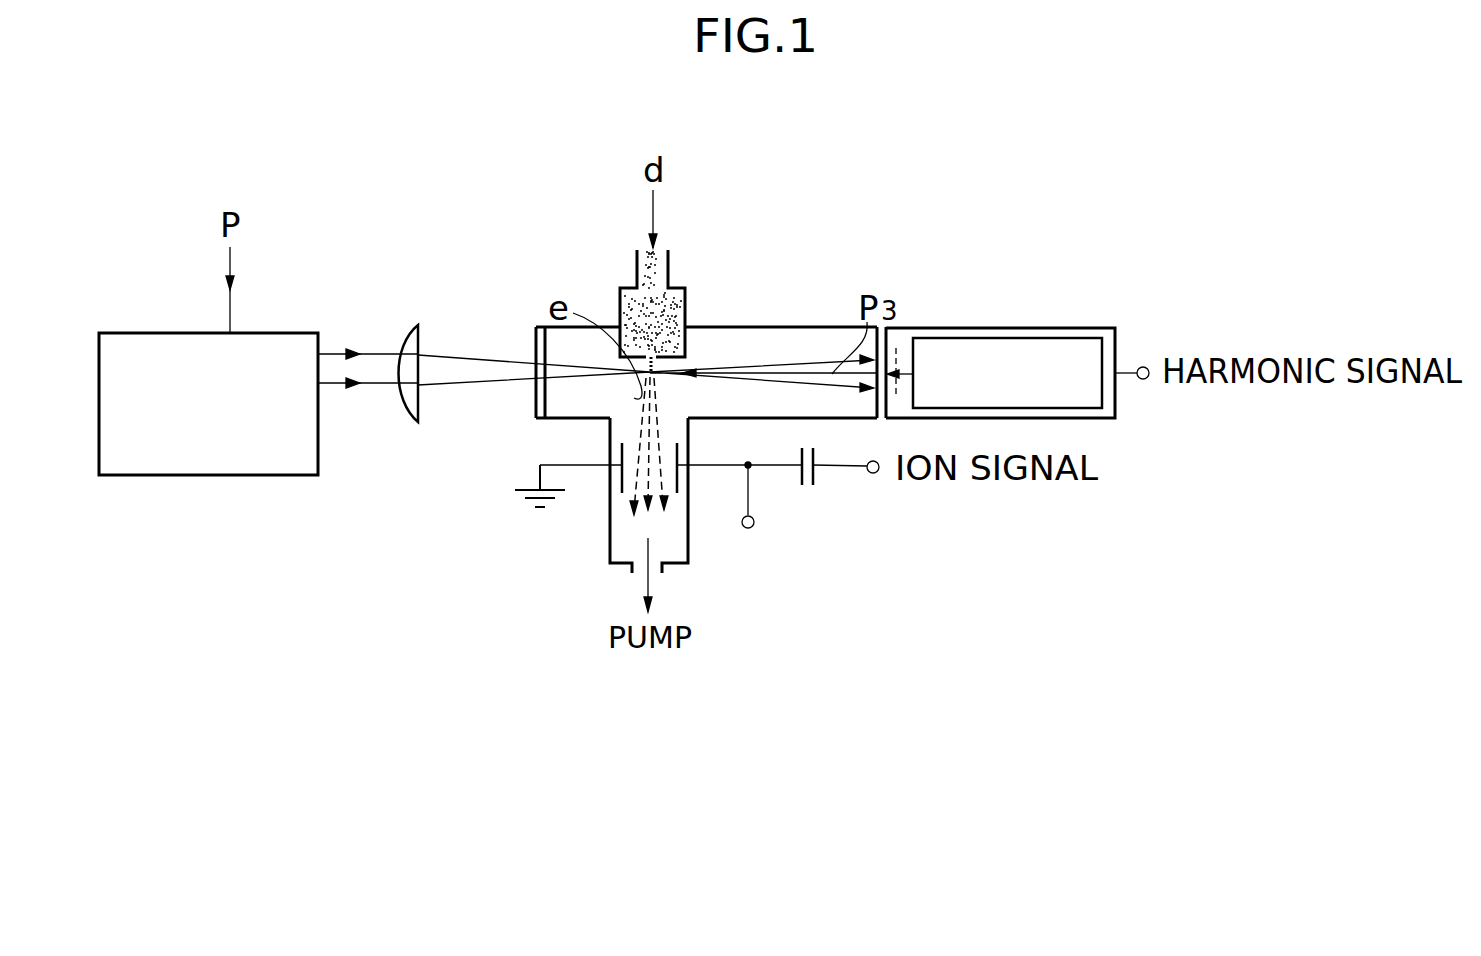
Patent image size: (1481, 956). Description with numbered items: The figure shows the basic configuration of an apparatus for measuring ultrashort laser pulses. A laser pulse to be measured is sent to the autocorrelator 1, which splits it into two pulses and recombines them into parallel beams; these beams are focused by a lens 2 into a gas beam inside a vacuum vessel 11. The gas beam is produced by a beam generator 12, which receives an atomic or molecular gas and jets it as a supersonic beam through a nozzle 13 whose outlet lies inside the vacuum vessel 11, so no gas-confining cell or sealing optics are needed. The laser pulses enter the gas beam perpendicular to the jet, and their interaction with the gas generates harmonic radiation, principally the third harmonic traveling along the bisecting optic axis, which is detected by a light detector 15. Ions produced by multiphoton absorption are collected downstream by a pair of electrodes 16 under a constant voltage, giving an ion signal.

The autocorrelator 1 is at (143, 333).
The lens 2 is at (403, 342).
The vacuum vessel 11 is at (790, 326).
The beam generator 12 is at (675, 290).
The nozzle 13 is at (657, 357).
The light detector 15 is at (1082, 338).
The pair of electrodes 16 is at (618, 478).